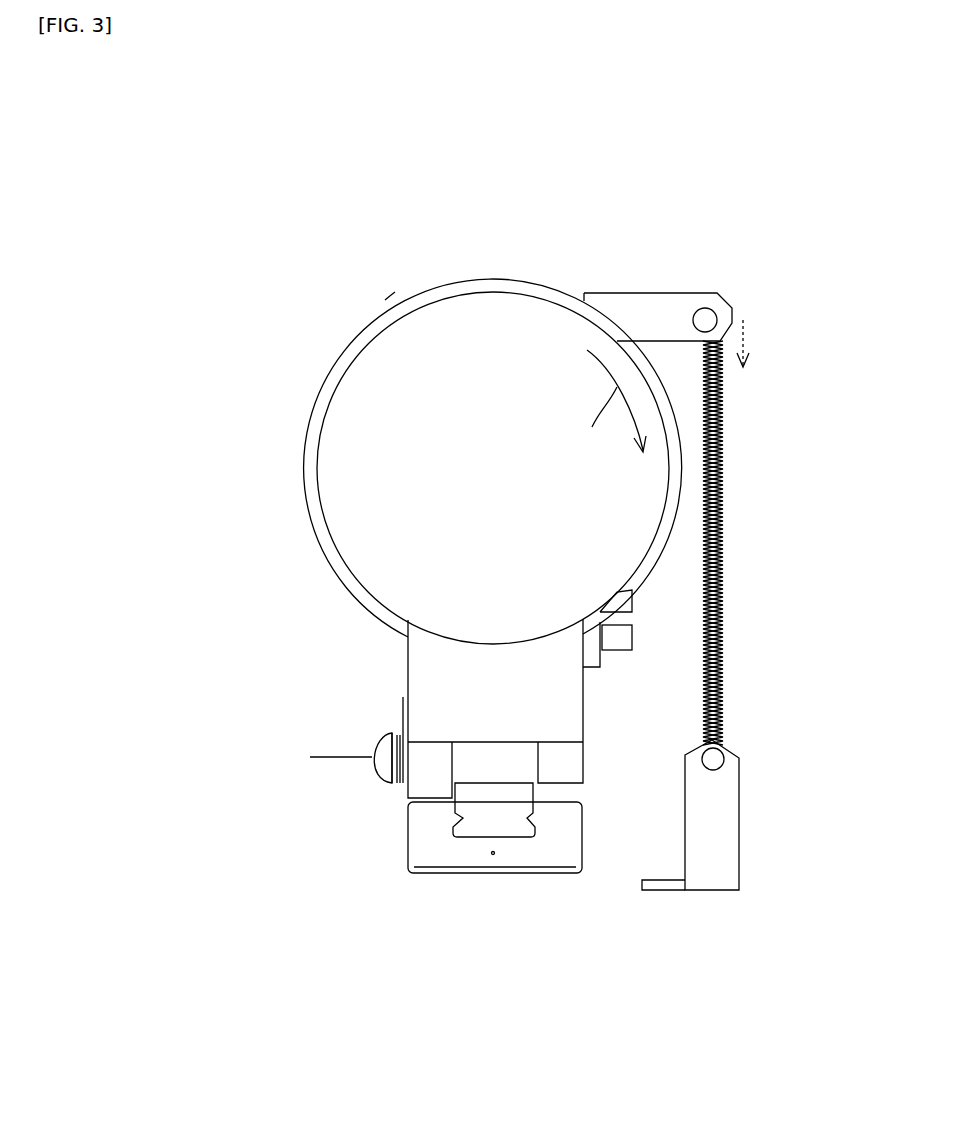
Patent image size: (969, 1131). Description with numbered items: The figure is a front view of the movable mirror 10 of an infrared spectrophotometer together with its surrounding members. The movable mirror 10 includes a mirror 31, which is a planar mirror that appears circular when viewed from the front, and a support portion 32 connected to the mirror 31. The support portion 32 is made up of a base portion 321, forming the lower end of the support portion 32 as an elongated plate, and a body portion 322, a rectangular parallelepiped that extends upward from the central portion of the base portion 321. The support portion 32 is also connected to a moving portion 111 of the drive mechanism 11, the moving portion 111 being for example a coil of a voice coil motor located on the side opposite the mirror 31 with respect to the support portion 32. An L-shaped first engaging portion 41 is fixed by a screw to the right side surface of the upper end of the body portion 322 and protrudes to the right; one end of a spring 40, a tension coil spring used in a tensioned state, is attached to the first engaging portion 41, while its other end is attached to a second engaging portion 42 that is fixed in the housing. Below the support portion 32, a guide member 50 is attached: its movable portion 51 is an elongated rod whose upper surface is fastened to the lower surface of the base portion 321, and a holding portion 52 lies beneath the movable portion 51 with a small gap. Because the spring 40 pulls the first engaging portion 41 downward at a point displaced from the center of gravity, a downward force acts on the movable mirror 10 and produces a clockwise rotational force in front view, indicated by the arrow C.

The movable mirror 10 is at (477, 404).
The drive mechanism 11 is at (436, 288).
The moving portion 111 is at (390, 313).
The mirror 31 is at (340, 378).
The support portion 32 is at (483, 694).
The base portion 321 is at (585, 747).
The body portion 322 is at (585, 686).
The spring 40 is at (722, 550).
The first engaging portion 41 is at (666, 292).
The second engaging portion 42 is at (740, 825).
The guide member 50 is at (467, 863).
The movable portion 51 is at (536, 795).
The holding portion 52 is at (490, 870).
The arrow C is at (616, 402).